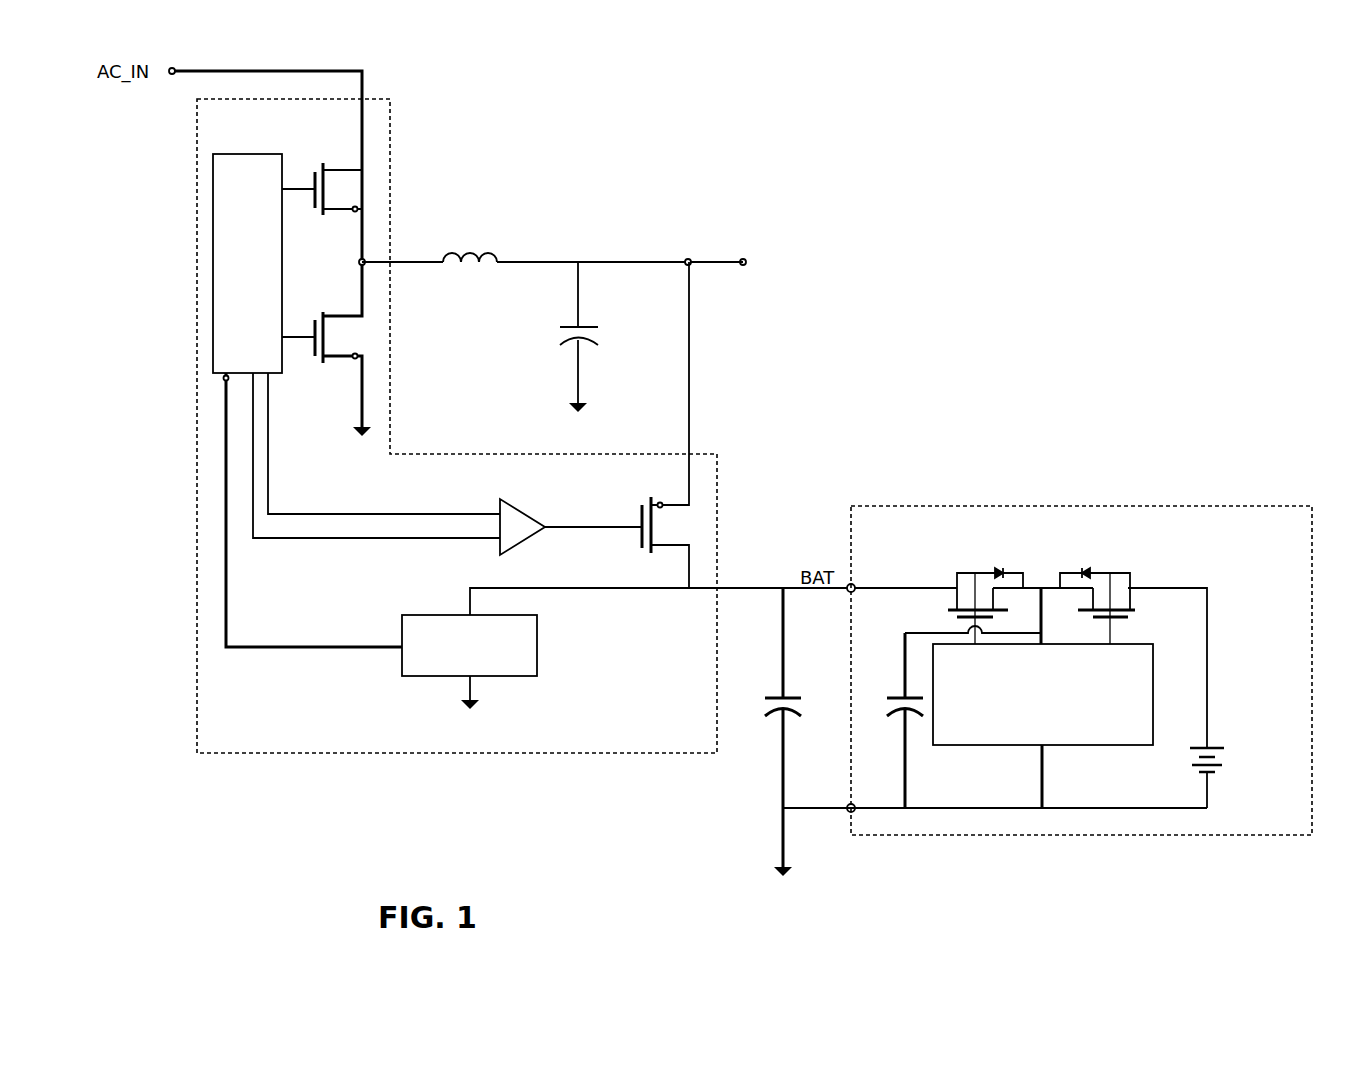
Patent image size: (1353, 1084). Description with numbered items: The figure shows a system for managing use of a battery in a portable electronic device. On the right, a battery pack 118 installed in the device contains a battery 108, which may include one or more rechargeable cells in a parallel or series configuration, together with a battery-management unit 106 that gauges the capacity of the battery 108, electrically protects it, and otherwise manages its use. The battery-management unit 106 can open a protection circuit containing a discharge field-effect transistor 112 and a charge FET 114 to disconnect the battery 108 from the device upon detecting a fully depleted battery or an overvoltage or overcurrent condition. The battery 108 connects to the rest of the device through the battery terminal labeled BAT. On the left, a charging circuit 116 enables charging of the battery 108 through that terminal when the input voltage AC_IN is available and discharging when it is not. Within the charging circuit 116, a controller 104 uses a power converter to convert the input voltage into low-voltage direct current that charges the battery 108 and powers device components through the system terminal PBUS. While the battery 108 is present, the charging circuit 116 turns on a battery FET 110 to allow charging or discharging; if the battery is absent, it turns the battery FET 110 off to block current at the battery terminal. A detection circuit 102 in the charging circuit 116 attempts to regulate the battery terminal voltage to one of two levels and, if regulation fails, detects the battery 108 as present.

The detection circuit 102 is at (469, 645).
The controller 104 is at (247, 263).
The battery-management unit 106 is at (1043, 694).
The battery 108 is at (1224, 772).
The battery FET 110 is at (665, 425).
The discharge field-effect transistor 112 is at (985, 597).
The charge FET 114 is at (1097, 597).
The charging circuit 116 is at (577, 426).
The battery pack 118 is at (1081, 670).